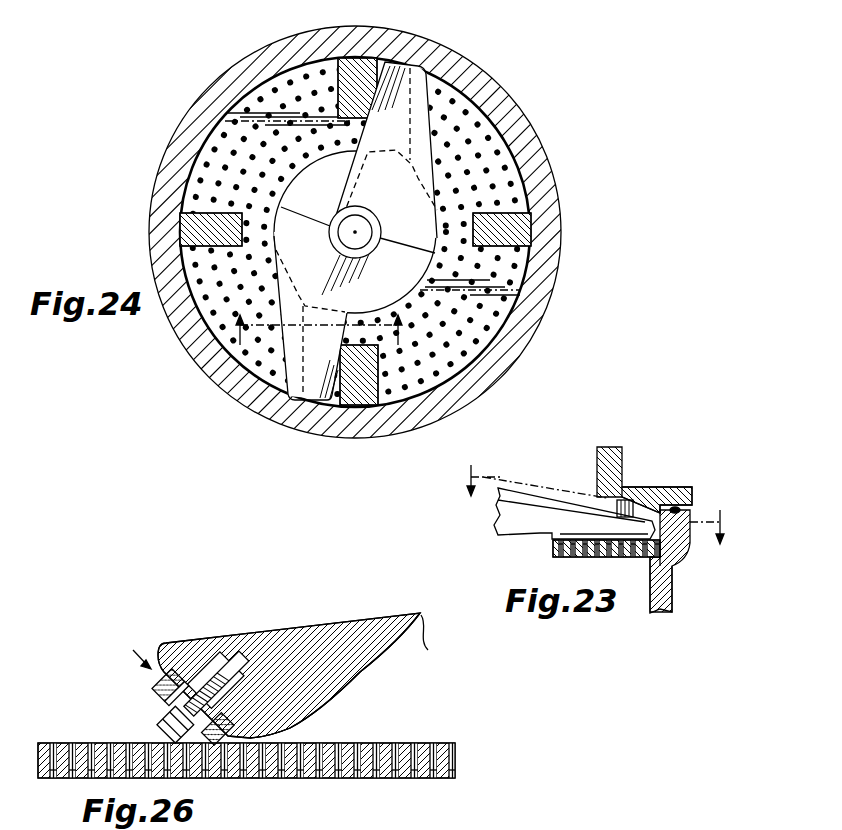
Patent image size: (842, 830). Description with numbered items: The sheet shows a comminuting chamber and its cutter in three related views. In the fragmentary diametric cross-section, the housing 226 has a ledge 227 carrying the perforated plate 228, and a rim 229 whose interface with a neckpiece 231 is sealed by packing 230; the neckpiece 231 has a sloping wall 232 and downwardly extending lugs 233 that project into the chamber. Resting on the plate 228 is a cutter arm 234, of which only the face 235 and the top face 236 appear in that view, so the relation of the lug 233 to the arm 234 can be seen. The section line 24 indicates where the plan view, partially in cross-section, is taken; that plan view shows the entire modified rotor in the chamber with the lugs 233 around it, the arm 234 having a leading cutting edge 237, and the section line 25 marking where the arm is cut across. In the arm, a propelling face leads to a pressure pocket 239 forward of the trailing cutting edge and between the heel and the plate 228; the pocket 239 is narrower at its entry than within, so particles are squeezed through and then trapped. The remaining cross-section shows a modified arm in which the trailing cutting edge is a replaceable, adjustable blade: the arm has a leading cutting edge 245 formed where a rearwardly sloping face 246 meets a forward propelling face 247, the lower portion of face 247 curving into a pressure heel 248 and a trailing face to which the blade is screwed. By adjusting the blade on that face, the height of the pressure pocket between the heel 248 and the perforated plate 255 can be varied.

In FIG. 23, the section line 24— 24 is at (592, 501).
In FIG. 24, the section line 25— 25 is at (321, 338).
In FIG. 24, the housing 226 is at (510, 105).
In FIG. 23, the housing 226 is at (668, 596).
In FIG. 23, the ledge 227 is at (655, 562).
In FIG. 24, the perforated plate 228 is at (500, 152).
In FIG. 23, the perforated plate 228 is at (595, 556).
In FIG. 23, the rim 229 is at (690, 520).
In FIG. 23, the packing 230 is at (678, 507).
In FIG. 23, the neckpiece 231 is at (620, 458).
In FIG. 23, the sloping wall 232 is at (628, 490).
In FIG. 24, the lugs 233 is at (360, 406).
In FIG. 23, the lugs 233 is at (620, 500).
In FIG. 24, the cutter arm 234 is at (418, 271).
In FIG. 23, the face 235 is at (560, 533).
In FIG. 24, the top face 236 is at (300, 398).
In FIG. 23, the top face 236 is at (527, 494).
In FIG. 24, the leading cutting edge 237 is at (352, 164).
In FIG. 23, the pressure pocket 239 is at (492, 516).
In FIG. 26, the leading cutting edge 245 is at (439, 637).
In FIG. 26, the rearwardly sloping face 246 is at (343, 622).
In FIG. 26, the forward propelling face 247 is at (355, 675).
In FIG. 26, the pressure heel 248 is at (300, 727).
In FIG. 26, the perforated plate 255 is at (410, 745).